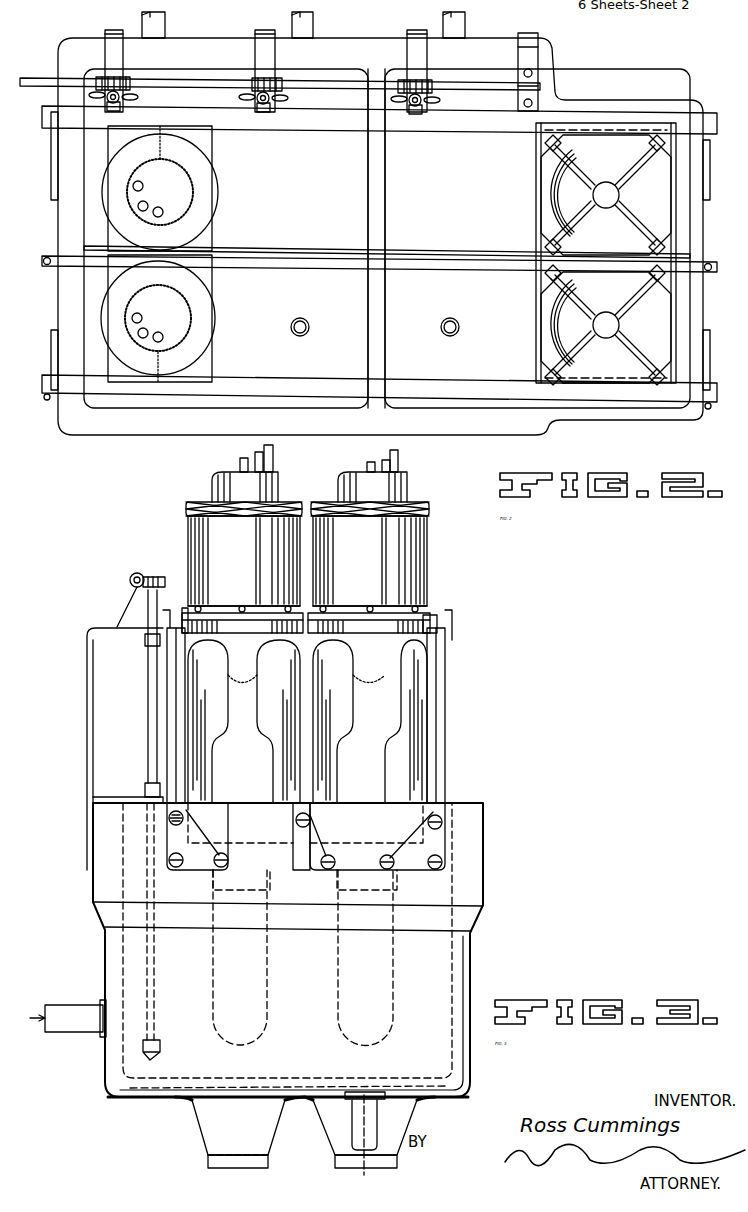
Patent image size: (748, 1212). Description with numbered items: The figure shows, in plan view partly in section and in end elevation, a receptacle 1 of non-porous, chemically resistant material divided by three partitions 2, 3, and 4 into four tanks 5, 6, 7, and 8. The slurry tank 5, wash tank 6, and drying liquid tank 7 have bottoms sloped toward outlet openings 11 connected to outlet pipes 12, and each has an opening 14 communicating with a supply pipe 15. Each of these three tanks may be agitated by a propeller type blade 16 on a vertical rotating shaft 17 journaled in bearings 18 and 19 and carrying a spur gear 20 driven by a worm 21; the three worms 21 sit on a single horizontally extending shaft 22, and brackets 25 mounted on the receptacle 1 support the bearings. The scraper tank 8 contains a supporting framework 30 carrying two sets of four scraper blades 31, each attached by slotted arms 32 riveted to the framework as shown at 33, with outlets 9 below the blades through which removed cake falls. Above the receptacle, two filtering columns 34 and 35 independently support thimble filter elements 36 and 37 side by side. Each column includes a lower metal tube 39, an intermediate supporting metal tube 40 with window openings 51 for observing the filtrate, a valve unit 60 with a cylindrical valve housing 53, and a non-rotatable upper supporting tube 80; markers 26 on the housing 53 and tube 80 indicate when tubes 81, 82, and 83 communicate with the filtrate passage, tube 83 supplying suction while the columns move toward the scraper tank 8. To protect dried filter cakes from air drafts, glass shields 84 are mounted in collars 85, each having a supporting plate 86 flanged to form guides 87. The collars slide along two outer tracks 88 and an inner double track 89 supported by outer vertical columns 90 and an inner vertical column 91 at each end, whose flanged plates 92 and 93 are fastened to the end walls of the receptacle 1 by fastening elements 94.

In FIG. 2, the receptacle 1 is at (565, 84).
In FIG. 3, the receptacle 1 is at (92, 931).
In FIG. 2, the partition 2 is at (226, 160).
In FIG. 3, the partition 2 is at (123, 852).
In FIG. 2, the partition 3 is at (385, 163).
In FIG. 2, the partition 4 is at (160, 126).
In FIG. 2, the slurry tank 5 is at (100, 291).
In FIG. 2, the wash tank 6 is at (308, 291).
In FIG. 2, the drying liquid tank 7 is at (461, 291).
In FIG. 2, the scraper tank 8 is at (535, 288).
In FIG. 3, the outlet 9 is at (210, 1148).
In FIG. 3, the outlet opening 11 is at (368, 1092).
In FIG. 2, the outlet pipe 12 is at (307, 322).
In FIG. 3, the outlet pipe 12 is at (372, 1128).
In FIG. 3, the opening 14 is at (108, 1003).
In FIG. 2, the pipe 15 is at (165, 23).
In FIG. 3, the pipe 15 is at (78, 1008).
In FIG. 2, the propeller type blade 16 is at (89, 96).
In FIG. 3, the propeller type blade 16 is at (160, 1047).
In FIG. 2, the vertical rotating shaft 17 is at (110, 104).
In FIG. 3, the vertical rotating shaft 17 is at (148, 695).
In FIG. 3, the bearing 18 is at (145, 787).
In FIG. 3, the bearing 19 is at (145, 640).
In FIG. 2, the spur gear 20 is at (662, 153).
In FIG. 3, the spur gear 20 is at (160, 577).
In FIG. 2, the worm 21 is at (125, 77).
In FIG. 3, the worm 21 is at (128, 596).
In FIG. 2, the horizontally extending shaft 22 is at (36, 86).
In FIG. 3, the horizontally extending shaft 22 is at (131, 576).
In FIG. 2, the bracket 25 is at (118, 22).
In FIG. 3, the bracket 25 is at (88, 730).
In FIG. 2, the marker 26 is at (160, 358).
In FIG. 2, the supporting framework 30 is at (675, 300).
In FIG. 2, the scraper blade 31 is at (592, 182).
In FIG. 2, the slotted arm 32 is at (636, 155).
In FIG. 2, the rivet 33 is at (545, 151).
In FIG. 2, the filtering column 34 is at (204, 203).
In FIG. 3, the filtering column 34 is at (212, 487).
In FIG. 2, the filtering column 35 is at (204, 301).
In FIG. 3, the filtering column 35 is at (420, 495).
In FIG. 3, the thimble filter element 36 is at (268, 980).
In FIG. 3, the thimble filter element 37 is at (392, 976).
In FIG. 3, the lower metal tube 39 is at (337, 880).
In FIG. 3, the intermediate supporting metal tube 40 is at (355, 665).
In FIG. 3, the window opening 51 is at (345, 736).
In FIG. 3, the cylindrical valve housing 53 is at (430, 548).
In FIG. 2, the valve unit 60 is at (225, 330).
In FIG. 3, the valve unit 60 is at (436, 576).
In FIG. 2, the upper supporting tube 80 is at (170, 340).
In FIG. 3, the upper supporting tube 80 is at (362, 483).
In FIG. 2, the tube 81 is at (163, 338).
In FIG. 3, the tube 81 is at (398, 455).
In FIG. 2, the tube 82 is at (147, 330).
In FIG. 3, the tube 82 is at (394, 465).
In FIG. 2, the suction tube 83 is at (140, 314).
In FIG. 3, the suction tube 83 is at (367, 465).
In FIG. 3, the glass shield 84 is at (190, 733).
In FIG. 3, the collar 85 is at (205, 644).
In FIG. 3, the supporting plate 86 is at (185, 608).
In FIG. 3, the guide 87 is at (200, 626).
In FIG. 2, the outer track 88 is at (345, 134).
In FIG. 3, the outer track 88 is at (170, 622).
In FIG. 2, the inner double track 89 is at (322, 242).
In FIG. 3, the inner double track 89 is at (292, 642).
In FIG. 3, the outer vertical column 90 is at (172, 750).
In FIG. 3, the inner vertical column 91 is at (305, 776).
In FIG. 2, the flanged plate 92 is at (52, 153).
In FIG. 3, the flanged plate 92 is at (205, 872).
In FIG. 2, the flanged plate 93 is at (48, 232).
In FIG. 3, the flanged plate 93 is at (300, 872).
In FIG. 3, the fastening element 94 is at (302, 818).